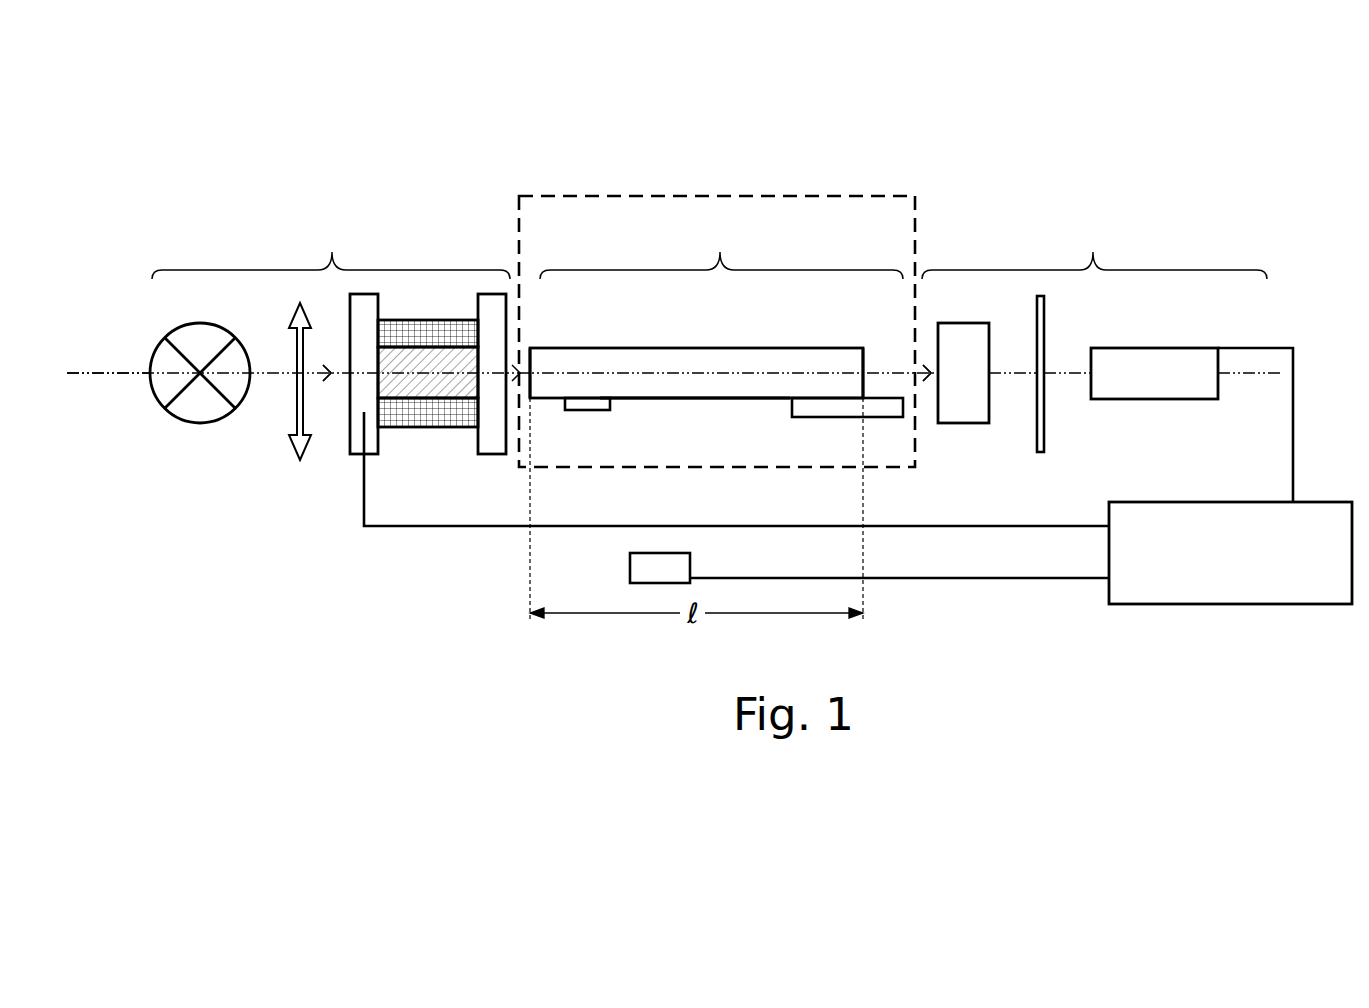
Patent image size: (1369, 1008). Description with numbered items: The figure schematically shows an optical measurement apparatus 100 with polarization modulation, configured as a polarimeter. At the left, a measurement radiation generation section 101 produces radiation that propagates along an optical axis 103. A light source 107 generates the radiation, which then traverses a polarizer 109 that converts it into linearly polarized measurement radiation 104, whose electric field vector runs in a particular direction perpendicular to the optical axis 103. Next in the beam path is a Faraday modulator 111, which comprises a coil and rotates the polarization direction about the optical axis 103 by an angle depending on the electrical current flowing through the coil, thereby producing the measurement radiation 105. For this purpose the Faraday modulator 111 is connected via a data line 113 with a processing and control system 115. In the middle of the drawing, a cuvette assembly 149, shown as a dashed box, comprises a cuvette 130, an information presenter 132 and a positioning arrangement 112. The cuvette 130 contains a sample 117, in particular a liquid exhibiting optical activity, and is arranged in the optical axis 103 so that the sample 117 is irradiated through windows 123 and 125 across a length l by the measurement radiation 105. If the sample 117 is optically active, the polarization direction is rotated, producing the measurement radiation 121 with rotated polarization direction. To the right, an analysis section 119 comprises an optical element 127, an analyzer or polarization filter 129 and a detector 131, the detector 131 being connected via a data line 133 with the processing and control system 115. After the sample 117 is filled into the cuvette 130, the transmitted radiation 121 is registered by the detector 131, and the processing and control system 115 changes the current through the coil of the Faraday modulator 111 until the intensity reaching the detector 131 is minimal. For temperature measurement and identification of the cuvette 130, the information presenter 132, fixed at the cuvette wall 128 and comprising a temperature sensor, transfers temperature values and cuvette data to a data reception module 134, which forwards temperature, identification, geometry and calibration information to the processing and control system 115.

The optical measurement apparatus 100 is at (1255, 157).
The measurement radiation generation section 101 is at (331, 250).
The optical axis 103 is at (82, 374).
The linearly polarized measurement radiation 104 is at (331, 373).
The measurement radiation 105 is at (519, 400).
The light source 107 is at (200, 423).
The polarizer 109 is at (291, 430).
The Faraday modulator 111 is at (395, 432).
The positioning arrangement 112 is at (800, 417).
The data line 113 is at (545, 528).
The processing and control system 115 is at (1163, 604).
The sample 117 is at (645, 360).
The analysis section 119 is at (1094, 251).
The measurement radiation with rotated polarization direction 121 is at (925, 378).
The window 123 is at (540, 353).
The window 125 is at (862, 360).
The optical element 127 is at (960, 323).
The cuvette wall 128 is at (688, 398).
The analyzer or polarization filter 129 is at (1044, 333).
The cuvette 130 is at (721, 251).
The detector 131 is at (1170, 348).
The information presenter 132 is at (585, 410).
The data line 133 is at (1292, 416).
The data reception module 134 is at (690, 568).
The cuvette assembly 149 is at (588, 196).